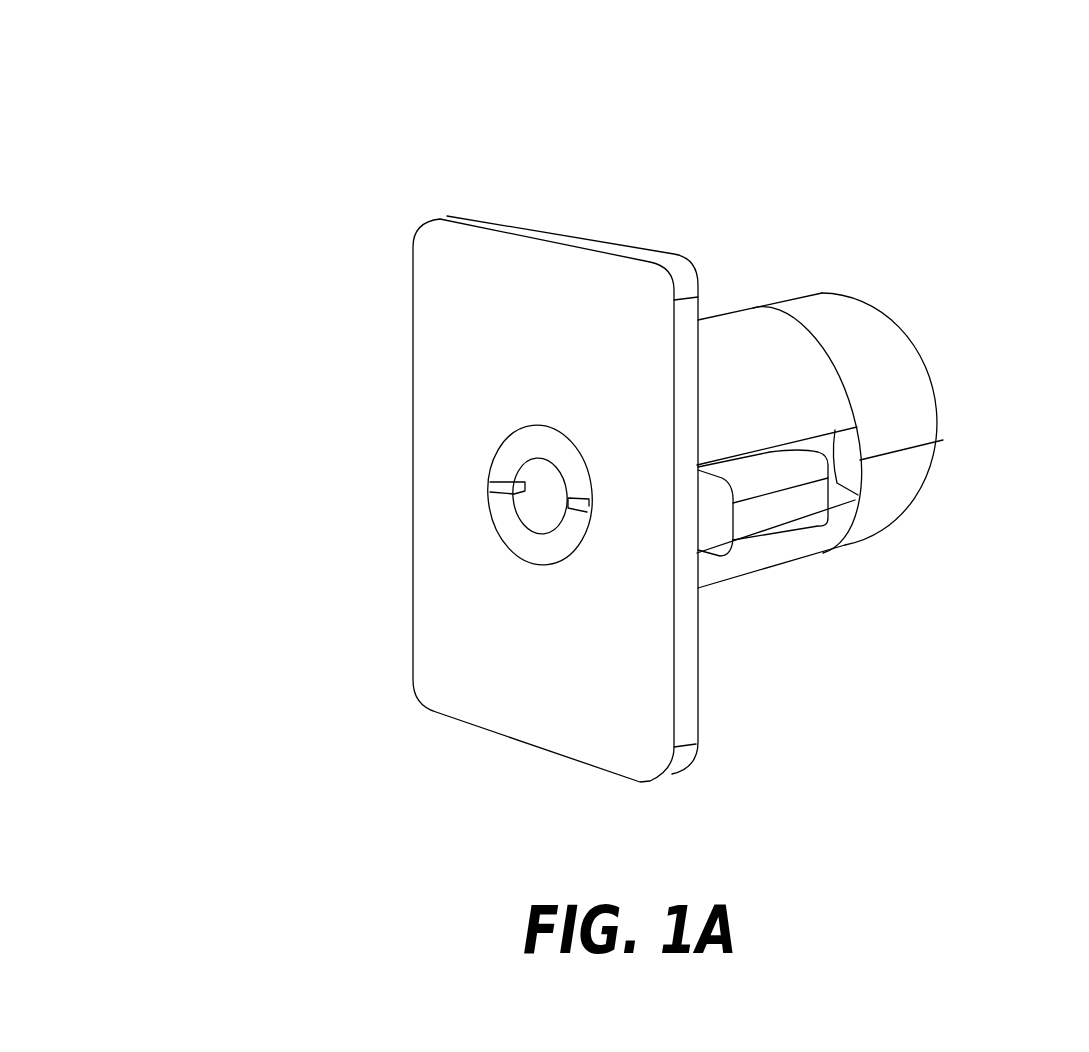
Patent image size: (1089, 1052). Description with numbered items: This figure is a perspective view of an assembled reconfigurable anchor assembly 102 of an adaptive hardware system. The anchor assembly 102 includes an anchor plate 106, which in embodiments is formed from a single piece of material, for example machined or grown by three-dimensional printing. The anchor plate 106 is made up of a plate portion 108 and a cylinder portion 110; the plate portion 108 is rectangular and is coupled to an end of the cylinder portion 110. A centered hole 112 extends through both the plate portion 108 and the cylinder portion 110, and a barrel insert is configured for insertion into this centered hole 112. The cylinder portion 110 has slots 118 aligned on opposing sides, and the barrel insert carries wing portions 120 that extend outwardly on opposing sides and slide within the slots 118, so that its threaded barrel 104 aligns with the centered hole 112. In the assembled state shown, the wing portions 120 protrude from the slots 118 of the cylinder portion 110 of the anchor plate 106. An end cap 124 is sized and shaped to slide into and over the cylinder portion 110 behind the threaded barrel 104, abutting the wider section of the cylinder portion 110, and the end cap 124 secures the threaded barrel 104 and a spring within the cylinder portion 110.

The reconfigurable anchor assembly 102 is at (217, 168).
The threaded barrel 104 is at (537, 496).
The anchor plate 106 is at (330, 382).
The plate portion 108 is at (503, 690).
The cylinder portion 110 is at (752, 365).
The centered hole 112 is at (493, 545).
The slots 118 is at (865, 487).
The wing portions 120 is at (772, 480).
The end cap 124 is at (912, 422).